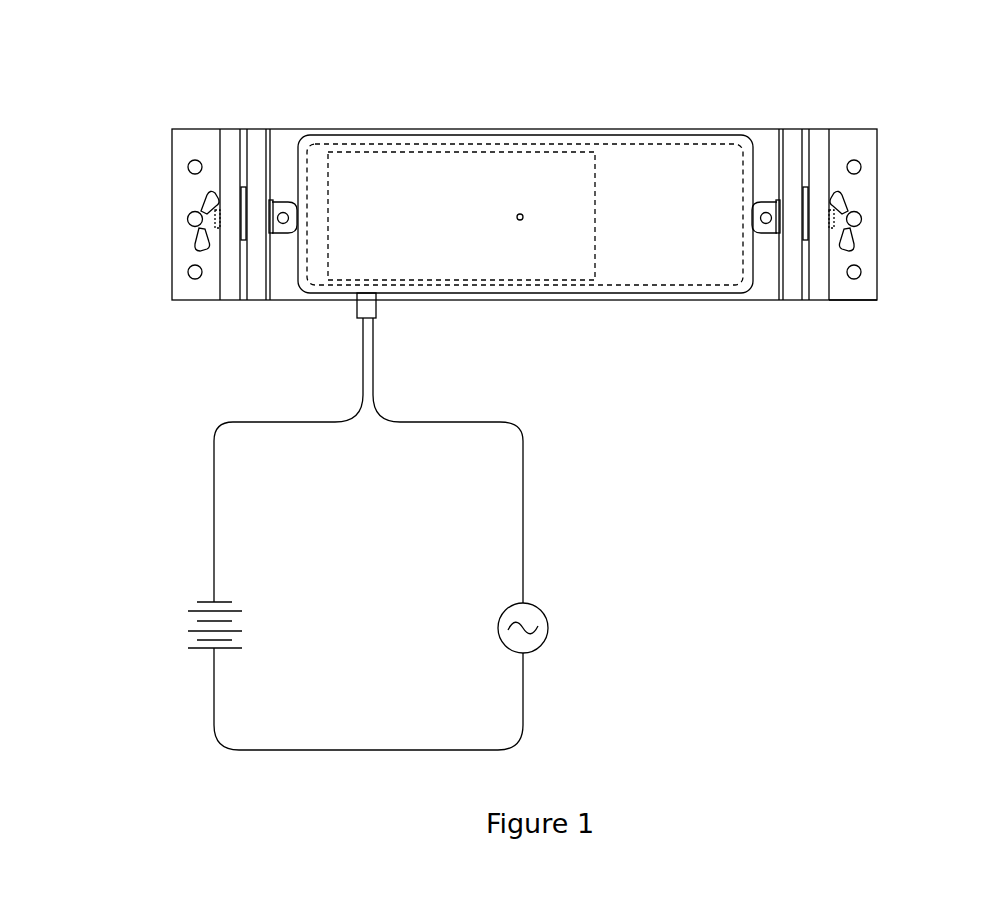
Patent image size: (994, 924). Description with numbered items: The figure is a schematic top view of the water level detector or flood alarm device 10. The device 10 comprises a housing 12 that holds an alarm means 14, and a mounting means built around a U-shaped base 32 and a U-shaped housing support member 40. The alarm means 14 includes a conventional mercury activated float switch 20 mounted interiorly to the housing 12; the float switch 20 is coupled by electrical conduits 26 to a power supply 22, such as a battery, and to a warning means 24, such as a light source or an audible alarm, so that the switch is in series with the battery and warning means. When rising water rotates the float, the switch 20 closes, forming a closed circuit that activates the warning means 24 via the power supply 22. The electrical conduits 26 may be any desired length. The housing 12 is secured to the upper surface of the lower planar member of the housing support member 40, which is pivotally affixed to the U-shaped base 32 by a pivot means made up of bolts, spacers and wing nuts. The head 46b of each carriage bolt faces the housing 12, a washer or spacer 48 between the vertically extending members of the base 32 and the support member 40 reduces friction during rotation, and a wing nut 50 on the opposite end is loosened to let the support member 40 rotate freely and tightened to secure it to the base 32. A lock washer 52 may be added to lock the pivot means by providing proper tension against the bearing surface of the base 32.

The water level detector or flood alarm device 10 is at (122, 270).
The housing 12 is at (647, 136).
The alarm means 14 is at (372, 586).
The float switch 20 is at (374, 147).
The power supply 22 is at (178, 632).
The warning means 24 is at (548, 618).
The electrical conduits 26 is at (363, 350).
The U-shaped base 32 is at (821, 152).
The U-shaped housing support member 40 is at (790, 150).
The head of the bolt 46b is at (277, 200).
The washer or spacer 48 is at (243, 186).
The wing nut 50 is at (197, 192).
The lock washer 52 is at (217, 240).